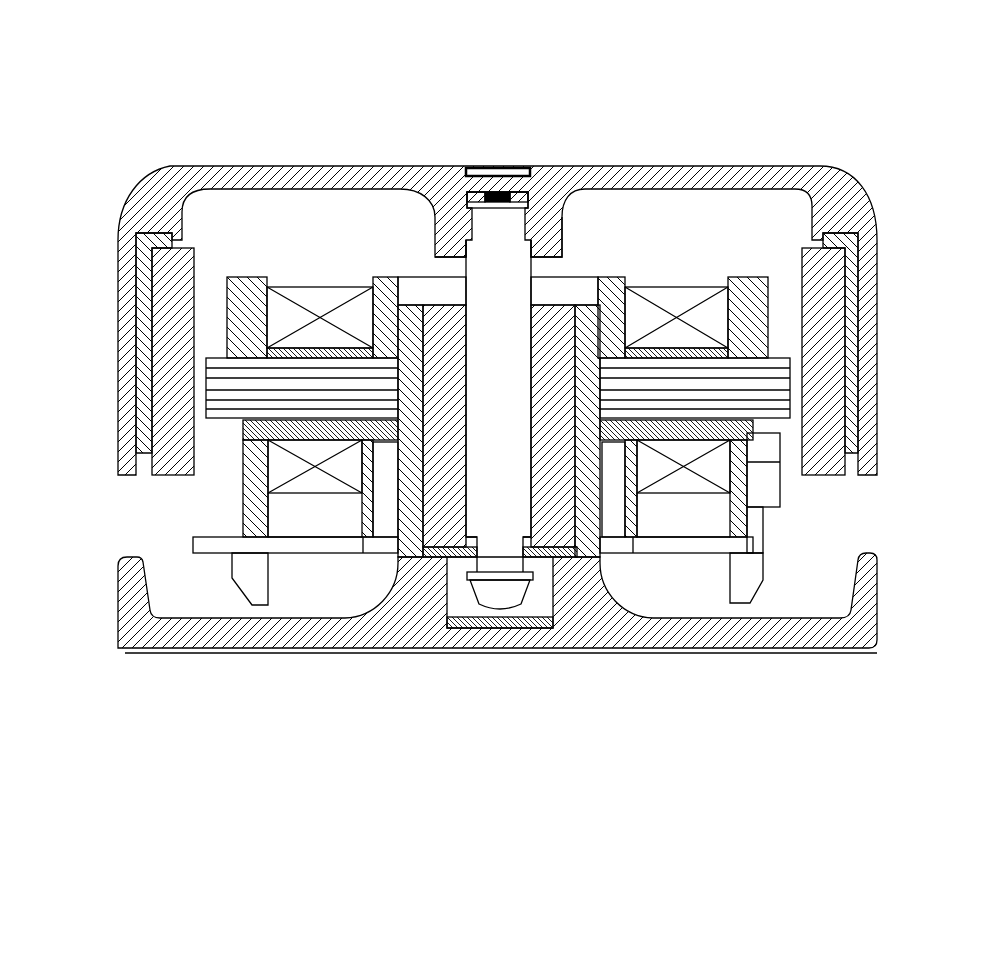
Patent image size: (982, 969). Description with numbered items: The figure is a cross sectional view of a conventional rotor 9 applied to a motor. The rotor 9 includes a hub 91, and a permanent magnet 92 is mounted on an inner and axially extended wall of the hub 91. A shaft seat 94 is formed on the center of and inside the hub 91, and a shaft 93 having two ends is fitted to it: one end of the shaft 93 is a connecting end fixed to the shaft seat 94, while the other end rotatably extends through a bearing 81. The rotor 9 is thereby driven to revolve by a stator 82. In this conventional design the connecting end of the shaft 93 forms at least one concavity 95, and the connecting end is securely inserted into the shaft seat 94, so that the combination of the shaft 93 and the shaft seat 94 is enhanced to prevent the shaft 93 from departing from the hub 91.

The rotor 9 is at (843, 135).
The hub 91 is at (690, 166).
The permanent magnet 92 is at (825, 323).
The shaft 93 is at (480, 267).
The shaft seat 94 is at (553, 237).
The concavity 95 is at (492, 222).
The bearing 81 is at (553, 500).
The stator 82 is at (785, 393).